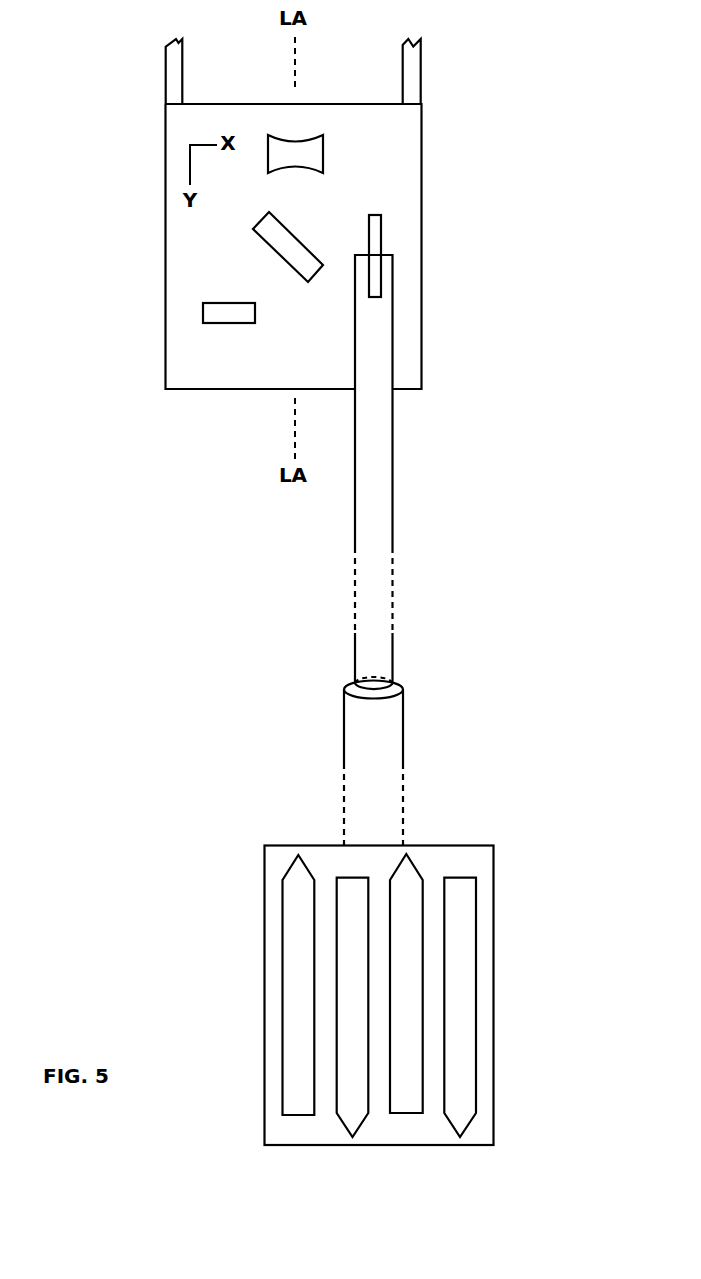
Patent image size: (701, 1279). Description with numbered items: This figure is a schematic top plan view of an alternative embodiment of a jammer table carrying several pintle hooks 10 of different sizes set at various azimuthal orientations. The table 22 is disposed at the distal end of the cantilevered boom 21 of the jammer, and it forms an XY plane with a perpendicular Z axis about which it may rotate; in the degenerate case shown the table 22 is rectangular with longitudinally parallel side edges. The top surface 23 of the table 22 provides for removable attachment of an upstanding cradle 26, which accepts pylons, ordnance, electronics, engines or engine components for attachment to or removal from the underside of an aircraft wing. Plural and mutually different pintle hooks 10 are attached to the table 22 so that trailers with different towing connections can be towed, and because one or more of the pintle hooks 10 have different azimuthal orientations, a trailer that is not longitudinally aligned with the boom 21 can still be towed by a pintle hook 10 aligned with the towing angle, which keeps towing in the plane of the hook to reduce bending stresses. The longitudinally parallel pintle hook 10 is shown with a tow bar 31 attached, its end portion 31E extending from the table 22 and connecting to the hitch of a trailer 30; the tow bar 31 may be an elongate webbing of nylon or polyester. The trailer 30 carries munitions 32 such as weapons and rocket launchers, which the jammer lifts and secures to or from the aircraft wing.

The pintle hook 10 is at (282, 237).
The boom 21 is at (172, 77).
The table 22 is at (422, 233).
The top surface 23 is at (385, 164).
The cradle 26 is at (308, 150).
The trailer 30 is at (472, 857).
The tow bar 31 is at (359, 728).
The shaft end portion 31E is at (377, 490).
The munitions 32 is at (350, 997).